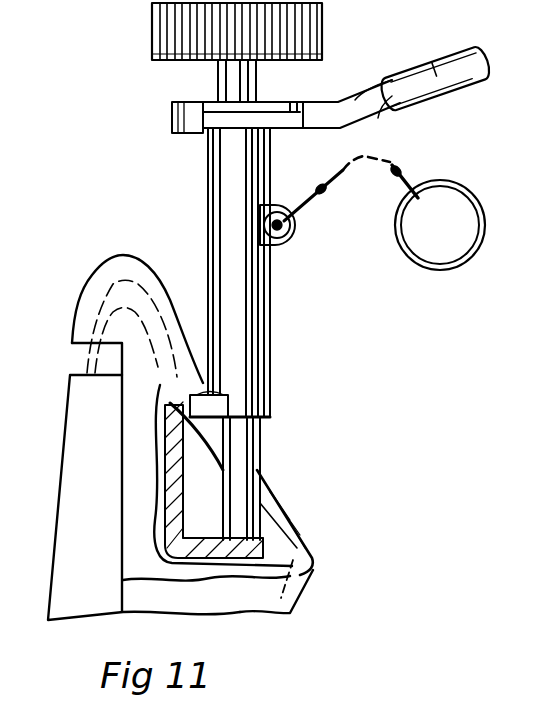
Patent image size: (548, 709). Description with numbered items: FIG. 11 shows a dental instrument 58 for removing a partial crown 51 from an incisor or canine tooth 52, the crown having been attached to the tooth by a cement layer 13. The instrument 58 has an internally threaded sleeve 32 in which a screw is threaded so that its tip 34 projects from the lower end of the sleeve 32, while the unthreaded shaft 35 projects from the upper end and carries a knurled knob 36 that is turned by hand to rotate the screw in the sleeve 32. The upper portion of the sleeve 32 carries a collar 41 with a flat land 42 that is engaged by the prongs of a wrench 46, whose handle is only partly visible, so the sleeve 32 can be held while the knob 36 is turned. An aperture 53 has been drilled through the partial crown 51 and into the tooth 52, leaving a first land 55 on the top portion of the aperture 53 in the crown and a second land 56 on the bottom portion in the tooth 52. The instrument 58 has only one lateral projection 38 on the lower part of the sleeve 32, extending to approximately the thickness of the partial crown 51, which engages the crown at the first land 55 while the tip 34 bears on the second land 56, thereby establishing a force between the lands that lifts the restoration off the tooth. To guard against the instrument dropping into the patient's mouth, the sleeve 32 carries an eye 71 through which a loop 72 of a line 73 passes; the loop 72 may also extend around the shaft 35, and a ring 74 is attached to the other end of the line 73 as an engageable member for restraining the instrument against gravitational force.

The knurled knob 36 is at (152, 25).
The shaft 35 is at (256, 97).
The land 42 is at (200, 101).
The collar 41 is at (174, 113).
The wrench 46 is at (440, 96).
The dental instrument 58 is at (198, 190).
The line 73 is at (360, 158).
The ring 74 is at (438, 180).
The loop 72 is at (314, 197).
The eye 71 is at (294, 238).
The sleeve 32 is at (272, 300).
The first land 55 is at (230, 395).
The tooth 52 is at (70, 395).
The cement layer 13 is at (173, 403).
The projection 38 is at (187, 487).
The aperture 53 is at (205, 535).
The second land 56 is at (262, 500).
The tip 34 is at (288, 518).
The partial crown 51 is at (310, 540).